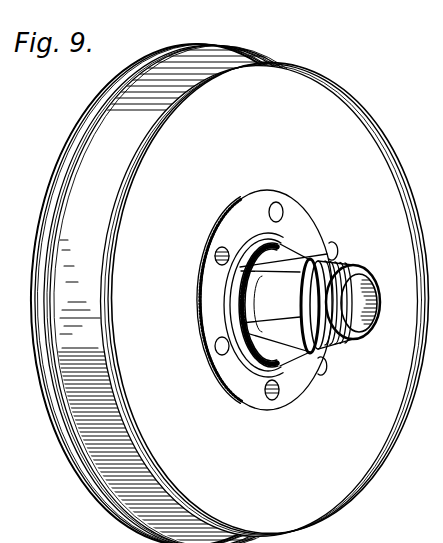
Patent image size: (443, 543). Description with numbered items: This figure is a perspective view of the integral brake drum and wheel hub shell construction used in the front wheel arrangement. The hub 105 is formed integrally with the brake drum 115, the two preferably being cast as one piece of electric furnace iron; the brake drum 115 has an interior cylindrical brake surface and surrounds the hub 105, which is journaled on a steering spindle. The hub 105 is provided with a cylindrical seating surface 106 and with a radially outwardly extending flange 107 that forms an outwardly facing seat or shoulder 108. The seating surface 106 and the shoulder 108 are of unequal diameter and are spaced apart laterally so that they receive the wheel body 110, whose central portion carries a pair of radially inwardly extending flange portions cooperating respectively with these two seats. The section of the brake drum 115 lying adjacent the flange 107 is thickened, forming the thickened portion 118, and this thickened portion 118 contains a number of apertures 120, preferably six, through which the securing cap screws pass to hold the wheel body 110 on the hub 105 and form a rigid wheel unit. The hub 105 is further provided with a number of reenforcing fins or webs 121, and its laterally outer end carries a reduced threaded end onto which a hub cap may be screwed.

The brake drum 115 is at (297, 63).
The thickened portion 118 is at (281, 191).
The apertures 120 is at (268, 212).
The reenforcing fins or webs 121 is at (215, 252).
The outwardly facing seat or shoulder 108 is at (225, 288).
The radially outwardly extending flange 107 is at (238, 323).
The hub 105 is at (303, 256).
The cylindrical seating surface 106 is at (344, 265).
The wheel body 110 is at (346, 336).